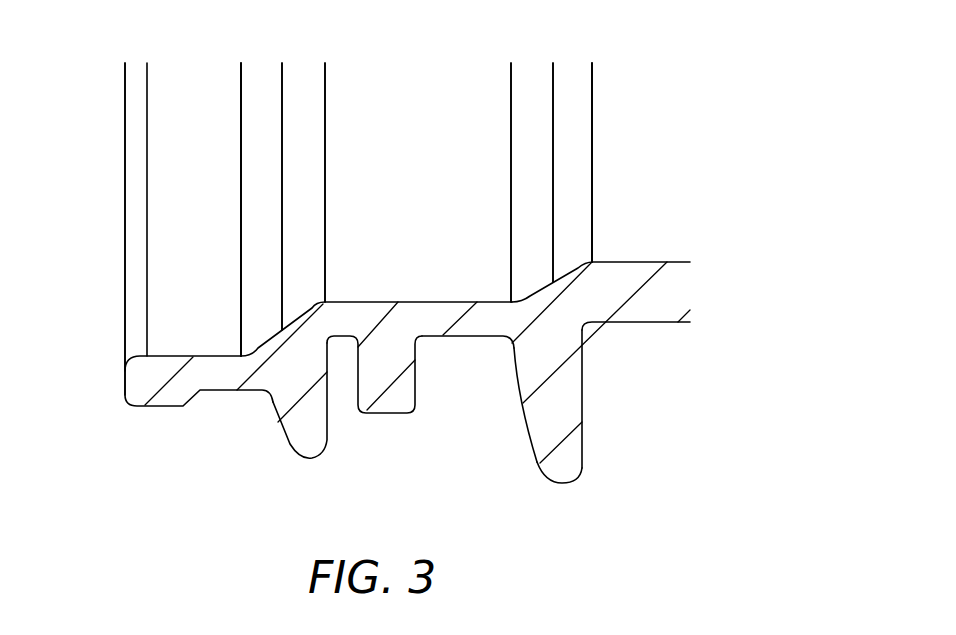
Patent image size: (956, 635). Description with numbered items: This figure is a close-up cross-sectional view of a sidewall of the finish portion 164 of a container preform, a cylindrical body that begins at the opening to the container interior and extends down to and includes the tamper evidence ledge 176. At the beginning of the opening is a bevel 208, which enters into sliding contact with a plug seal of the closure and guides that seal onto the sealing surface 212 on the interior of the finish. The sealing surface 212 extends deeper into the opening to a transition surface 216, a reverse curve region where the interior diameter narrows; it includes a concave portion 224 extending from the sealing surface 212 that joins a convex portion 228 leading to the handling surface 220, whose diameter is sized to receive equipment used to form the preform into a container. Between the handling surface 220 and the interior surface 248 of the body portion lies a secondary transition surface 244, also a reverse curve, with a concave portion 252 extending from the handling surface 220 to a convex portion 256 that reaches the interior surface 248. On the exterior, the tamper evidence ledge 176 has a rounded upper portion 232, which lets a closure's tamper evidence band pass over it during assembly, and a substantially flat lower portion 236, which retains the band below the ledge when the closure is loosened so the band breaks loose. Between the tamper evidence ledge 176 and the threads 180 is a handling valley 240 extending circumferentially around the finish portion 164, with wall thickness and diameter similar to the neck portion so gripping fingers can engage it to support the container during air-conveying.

The finish portion 164 is at (195, 472).
The tamper evidence ledge 176 is at (577, 481).
The threads 180 is at (311, 460).
The bevel 208 is at (135, 135).
The sealing surface 212 is at (210, 305).
The transition surface 216 is at (241, 242).
The handling surface 220 is at (433, 238).
The concave portion 224 is at (258, 78).
The convex portion 228 is at (302, 77).
The rounded upper portion 232 is at (530, 455).
The flat lower portion 236 is at (583, 402).
The handling valley 240 is at (443, 337).
The secondary transition surface 244 is at (592, 148).
The interior surface 248 is at (667, 197).
The concave portion 252 is at (533, 72).
The convex portion 256 is at (570, 72).